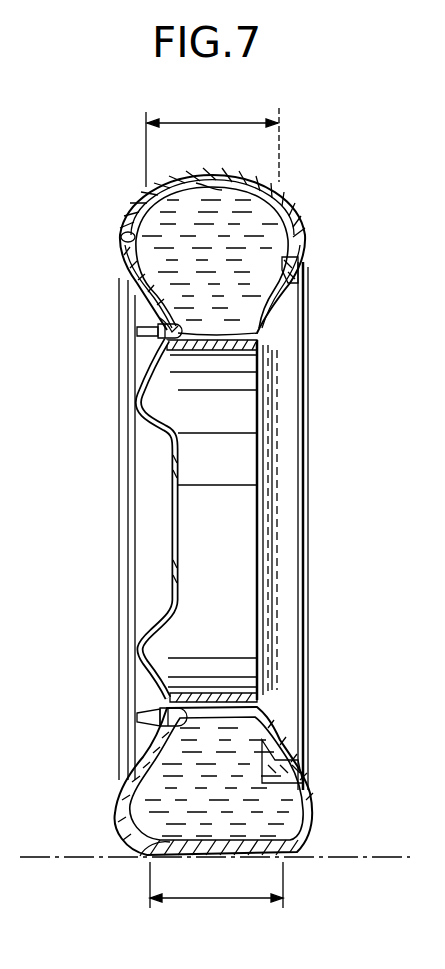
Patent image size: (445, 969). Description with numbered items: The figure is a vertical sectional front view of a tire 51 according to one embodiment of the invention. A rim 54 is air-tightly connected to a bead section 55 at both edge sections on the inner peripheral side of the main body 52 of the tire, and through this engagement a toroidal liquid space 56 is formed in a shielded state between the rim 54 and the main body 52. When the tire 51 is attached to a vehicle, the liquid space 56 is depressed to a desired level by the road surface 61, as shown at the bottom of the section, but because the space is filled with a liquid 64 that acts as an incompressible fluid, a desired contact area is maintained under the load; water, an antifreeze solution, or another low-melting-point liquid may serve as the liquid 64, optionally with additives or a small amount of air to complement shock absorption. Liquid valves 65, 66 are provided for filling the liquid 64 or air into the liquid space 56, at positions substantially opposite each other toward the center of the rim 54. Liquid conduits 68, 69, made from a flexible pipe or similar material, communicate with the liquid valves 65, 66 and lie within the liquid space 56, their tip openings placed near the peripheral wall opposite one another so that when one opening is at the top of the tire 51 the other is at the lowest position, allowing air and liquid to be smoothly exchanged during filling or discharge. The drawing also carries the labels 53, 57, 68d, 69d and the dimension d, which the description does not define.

The tire 51 is at (300, 203).
The main body of the tire 52 is at (130, 212).
The tread portion 53 is at (243, 176).
The rim 54 is at (122, 278).
The bead section 55 is at (138, 293).
The liquid space 56 is at (120, 238).
The wheel disc 57 is at (152, 427).
The road surface 61 is at (323, 862).
The liquid 64 is at (270, 233).
The liquid valve 65 is at (135, 342).
The liquid valve 66 is at (137, 714).
The liquid conduit 68 is at (306, 262).
The upper tread crown portion 68d is at (204, 186).
The liquid conduit 69 is at (312, 808).
The contact edge 69d is at (130, 848).
The tread width dimension d is at (214, 503).